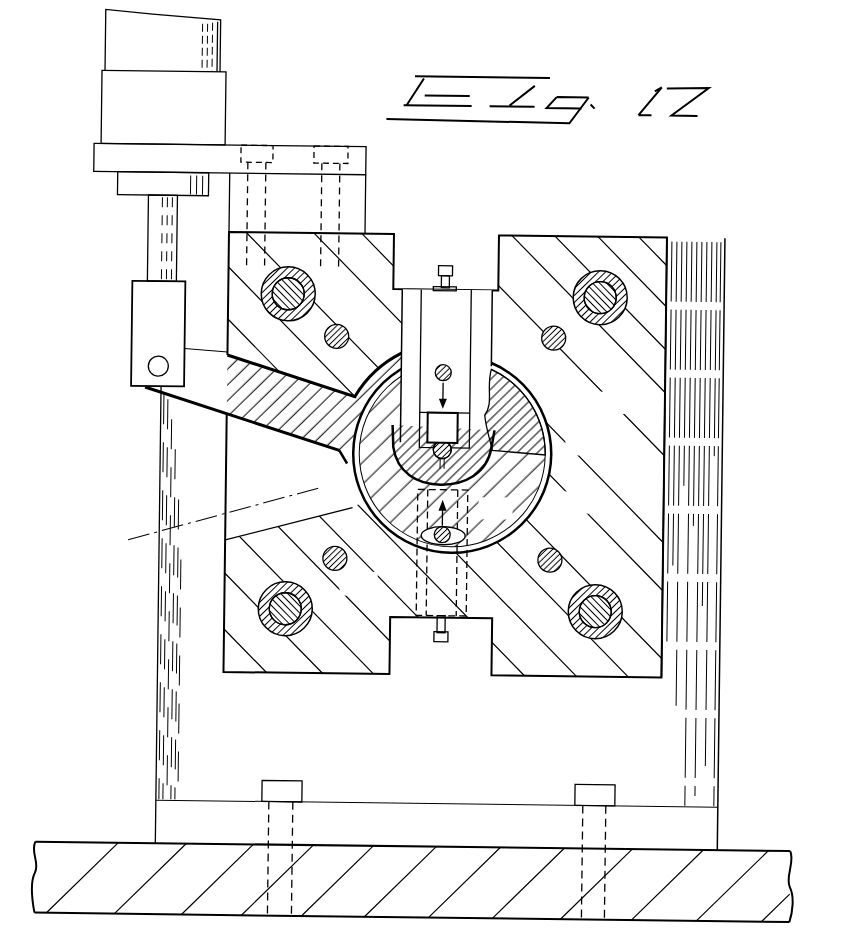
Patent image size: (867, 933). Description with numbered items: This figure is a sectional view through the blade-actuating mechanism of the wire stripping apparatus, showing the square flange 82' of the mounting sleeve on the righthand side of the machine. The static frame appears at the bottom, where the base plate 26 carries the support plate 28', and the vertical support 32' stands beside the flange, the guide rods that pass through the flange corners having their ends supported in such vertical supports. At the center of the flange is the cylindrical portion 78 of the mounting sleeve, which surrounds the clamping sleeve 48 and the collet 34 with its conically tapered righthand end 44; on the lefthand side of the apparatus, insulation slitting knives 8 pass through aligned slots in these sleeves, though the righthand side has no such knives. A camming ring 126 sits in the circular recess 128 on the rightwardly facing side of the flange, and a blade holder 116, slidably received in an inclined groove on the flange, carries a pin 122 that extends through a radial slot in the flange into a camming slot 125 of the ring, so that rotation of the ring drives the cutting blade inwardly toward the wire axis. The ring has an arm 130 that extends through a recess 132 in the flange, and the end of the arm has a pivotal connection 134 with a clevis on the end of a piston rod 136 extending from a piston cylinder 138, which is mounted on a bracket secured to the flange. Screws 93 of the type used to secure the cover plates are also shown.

The base plate 26 is at (87, 852).
The support plate 28' is at (436, 830).
The vertical support 32' is at (725, 545).
The collet 34 is at (600, 295).
The conically tapered righthand end 44 is at (452, 458).
The clamping sleeve 48 is at (425, 458).
The cylindrical portion 78 is at (490, 450).
The flange 82' is at (456, 455).
The screws 93 is at (557, 553).
The blade holder 116 is at (458, 310).
The pin 122 is at (443, 362).
The camming slot 125 is at (350, 466).
The camming ring 126 is at (522, 475).
The circular recess 128 is at (537, 412).
The arm 130 is at (232, 400).
The recess 132 is at (248, 510).
The pivotal connection 134 is at (152, 368).
The piston rod 136 is at (148, 233).
The piston cylinder 138 is at (207, 52).
The insulation slitting knives 8 is at (437, 430).